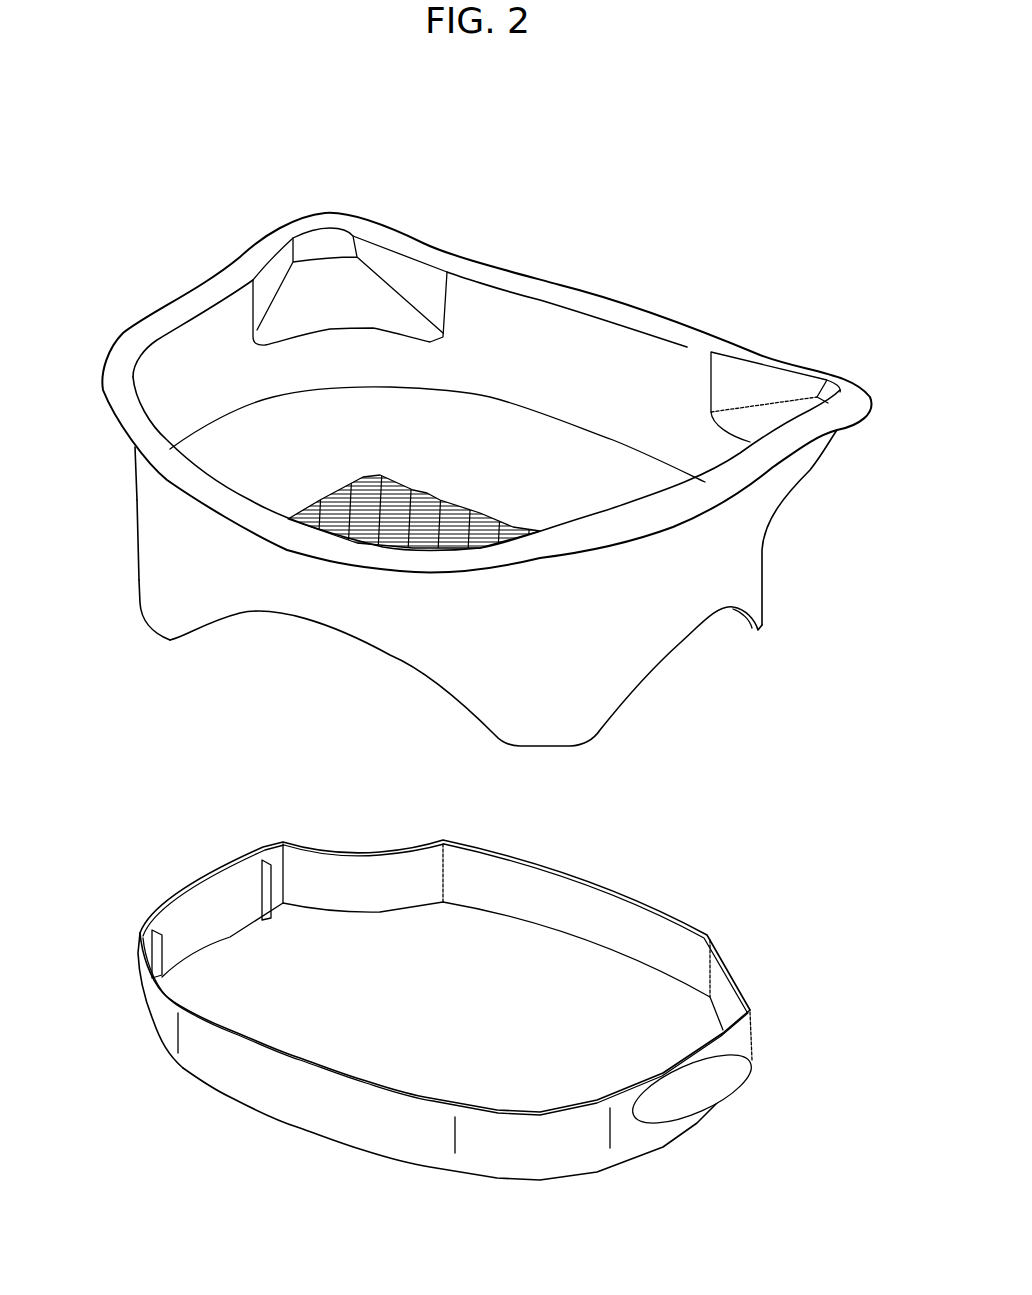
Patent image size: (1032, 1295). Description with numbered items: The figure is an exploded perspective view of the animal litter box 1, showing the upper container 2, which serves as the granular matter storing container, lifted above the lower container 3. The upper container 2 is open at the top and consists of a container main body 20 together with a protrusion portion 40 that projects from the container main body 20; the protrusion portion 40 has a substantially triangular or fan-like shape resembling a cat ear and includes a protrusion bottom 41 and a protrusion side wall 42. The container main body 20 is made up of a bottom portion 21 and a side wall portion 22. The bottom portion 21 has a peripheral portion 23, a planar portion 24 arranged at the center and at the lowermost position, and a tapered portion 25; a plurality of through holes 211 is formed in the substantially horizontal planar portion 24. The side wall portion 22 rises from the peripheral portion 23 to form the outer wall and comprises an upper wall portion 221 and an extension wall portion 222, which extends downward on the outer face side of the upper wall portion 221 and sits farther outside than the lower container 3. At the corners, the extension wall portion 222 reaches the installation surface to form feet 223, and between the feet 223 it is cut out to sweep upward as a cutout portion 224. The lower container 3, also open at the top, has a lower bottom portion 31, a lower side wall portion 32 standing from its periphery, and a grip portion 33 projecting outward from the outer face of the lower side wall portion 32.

The animal litter box 1 is at (684, 122).
The upper container 2 is at (688, 313).
The container main body 20 is at (800, 558).
The bottom portion 21 is at (280, 453).
The through holes 211 is at (450, 520).
The side wall portion 22 is at (177, 370).
The peripheral portion 23 is at (223, 423).
The planar portion 24 is at (427, 493).
The tapered portion 25 is at (577, 480).
The upper wall portion 221 is at (147, 478).
The extension wall portion 222 is at (152, 563).
The feet 223 is at (153, 607).
The cutout portion 224 is at (322, 630).
The lower container 3 is at (685, 892).
The lower bottom portion 31 is at (490, 945).
The lower side wall portion 32 is at (557, 888).
The grip portion 33 is at (737, 1087).
The protrusion portion 40 is at (808, 330).
The protrusion bottom 41 is at (330, 280).
The protrusion side wall 42 is at (392, 260).